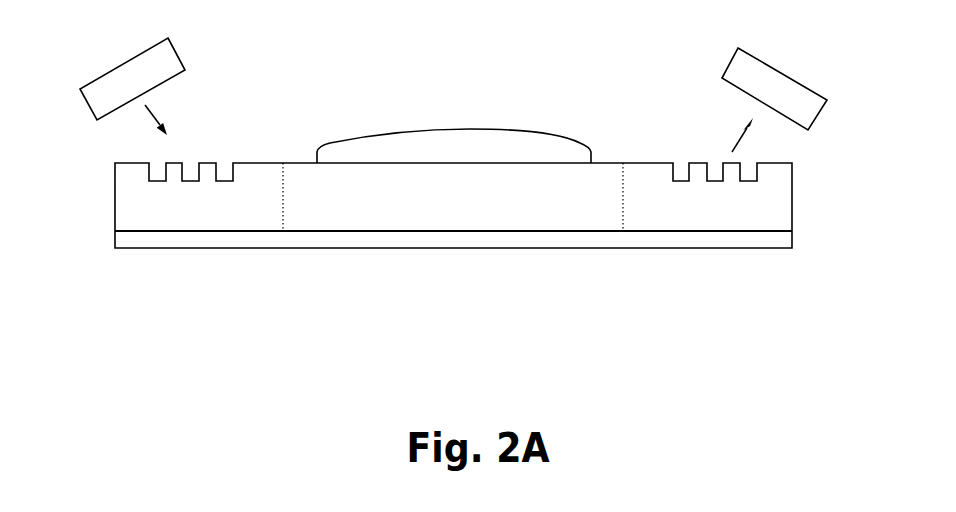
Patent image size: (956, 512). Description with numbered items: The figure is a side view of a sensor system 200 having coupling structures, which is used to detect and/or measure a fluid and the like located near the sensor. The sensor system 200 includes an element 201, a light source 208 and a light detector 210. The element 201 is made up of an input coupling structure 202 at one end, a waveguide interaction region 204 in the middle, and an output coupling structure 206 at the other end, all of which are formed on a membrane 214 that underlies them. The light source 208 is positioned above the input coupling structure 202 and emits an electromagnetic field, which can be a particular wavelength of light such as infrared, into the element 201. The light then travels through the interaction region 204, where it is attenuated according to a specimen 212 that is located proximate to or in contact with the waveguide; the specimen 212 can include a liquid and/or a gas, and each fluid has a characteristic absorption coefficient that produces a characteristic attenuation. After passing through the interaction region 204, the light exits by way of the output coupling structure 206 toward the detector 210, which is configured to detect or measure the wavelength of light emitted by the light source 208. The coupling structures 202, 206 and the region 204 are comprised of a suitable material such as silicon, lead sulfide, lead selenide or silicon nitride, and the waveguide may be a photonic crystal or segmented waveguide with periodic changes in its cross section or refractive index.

The sensor system 200 is at (213, 394).
The element 201 is at (345, 340).
The input coupling structure 202 is at (165, 224).
The interaction region 204 is at (481, 224).
The output coupling structure 206 is at (689, 224).
The light source 208 is at (130, 58).
The light detector 210 is at (730, 65).
The specimen 212 is at (420, 129).
The membrane 214 is at (115, 241).